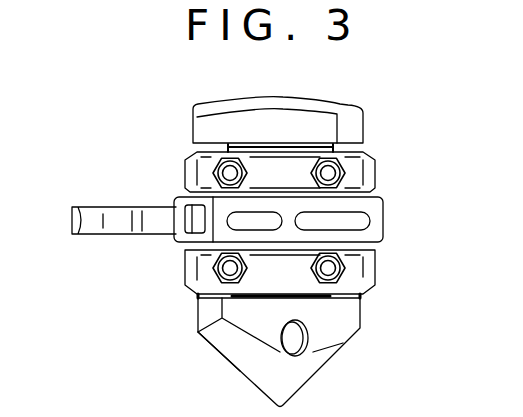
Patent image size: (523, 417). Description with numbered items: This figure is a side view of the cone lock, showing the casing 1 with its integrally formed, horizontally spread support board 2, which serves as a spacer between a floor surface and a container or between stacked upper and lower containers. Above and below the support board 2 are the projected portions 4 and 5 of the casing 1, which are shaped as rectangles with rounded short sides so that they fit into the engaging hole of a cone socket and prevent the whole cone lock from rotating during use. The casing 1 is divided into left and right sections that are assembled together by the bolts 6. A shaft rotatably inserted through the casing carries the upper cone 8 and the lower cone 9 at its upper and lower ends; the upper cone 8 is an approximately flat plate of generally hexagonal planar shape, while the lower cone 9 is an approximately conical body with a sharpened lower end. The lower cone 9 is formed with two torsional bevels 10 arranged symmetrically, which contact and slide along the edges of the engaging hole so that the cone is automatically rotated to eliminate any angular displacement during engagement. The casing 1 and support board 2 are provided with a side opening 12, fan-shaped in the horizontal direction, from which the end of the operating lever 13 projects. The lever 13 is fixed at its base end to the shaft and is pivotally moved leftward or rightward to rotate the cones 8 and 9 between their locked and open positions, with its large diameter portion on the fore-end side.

The casing 1 is at (183, 166).
The support board 2 is at (373, 223).
The upper projected portion 4 is at (355, 177).
The lower projected portion 5 is at (355, 270).
The bolts 6 is at (337, 172).
The upper cone 8 is at (303, 127).
The lower cone 9 is at (322, 363).
The torsional bevels 10 is at (242, 362).
The opening 12 is at (205, 212).
The operating lever 13 is at (118, 218).